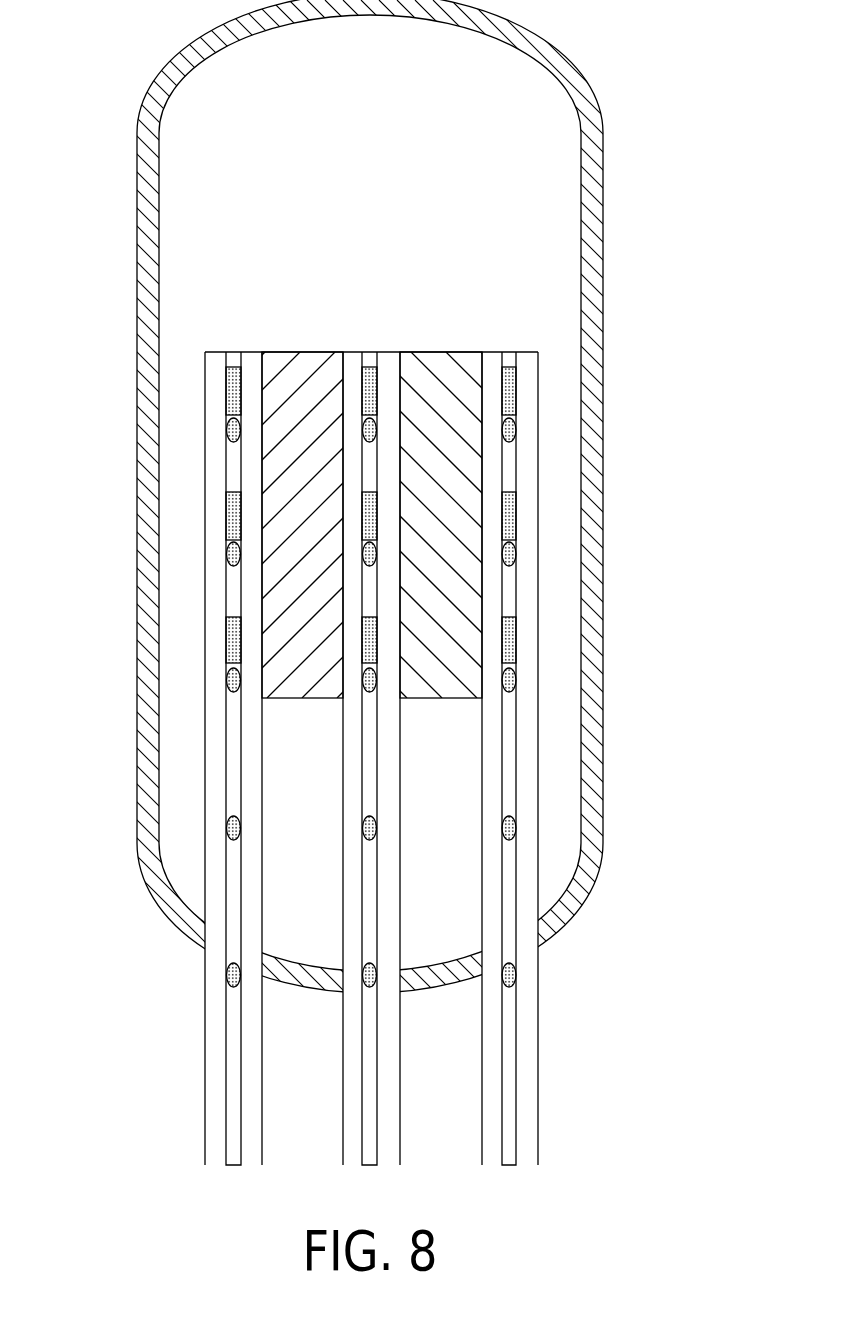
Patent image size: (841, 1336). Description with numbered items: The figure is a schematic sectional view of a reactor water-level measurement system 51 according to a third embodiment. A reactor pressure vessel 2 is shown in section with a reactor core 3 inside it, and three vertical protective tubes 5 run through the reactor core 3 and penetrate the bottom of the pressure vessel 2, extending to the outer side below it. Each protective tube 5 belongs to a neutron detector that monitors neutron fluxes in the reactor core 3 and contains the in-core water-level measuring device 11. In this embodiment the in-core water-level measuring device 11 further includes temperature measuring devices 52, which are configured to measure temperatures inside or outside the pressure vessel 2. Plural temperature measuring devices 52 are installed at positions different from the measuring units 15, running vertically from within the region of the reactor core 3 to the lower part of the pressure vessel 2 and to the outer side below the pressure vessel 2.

The reactor pressure vessel 2 is at (137, 181).
The reactor core 3 is at (300, 352).
The protective tube 5 is at (343, 830).
The in-core water-level measuring device 11 is at (362, 474).
The measuring unit 15 is at (362, 391).
The reactor water-level measurement system 51 is at (420, 668).
The temperature measuring device 52 is at (226, 432).